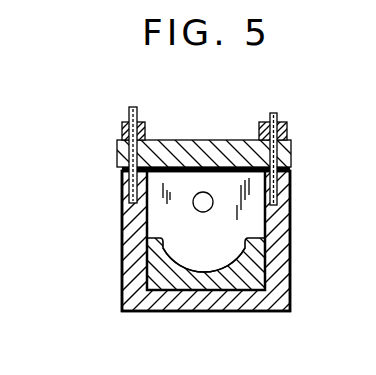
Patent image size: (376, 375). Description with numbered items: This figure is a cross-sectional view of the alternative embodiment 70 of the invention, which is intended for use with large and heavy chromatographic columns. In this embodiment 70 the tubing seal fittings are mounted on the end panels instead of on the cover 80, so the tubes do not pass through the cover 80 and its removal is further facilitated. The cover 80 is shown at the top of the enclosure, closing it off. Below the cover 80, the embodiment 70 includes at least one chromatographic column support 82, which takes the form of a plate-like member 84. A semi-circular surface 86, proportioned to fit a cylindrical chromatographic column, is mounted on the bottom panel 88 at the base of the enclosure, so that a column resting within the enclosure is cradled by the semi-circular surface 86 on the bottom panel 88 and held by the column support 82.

The alternative embodiment 70 is at (100, 243).
The cover 80 is at (185, 140).
The chromatographic column support 82 is at (162, 275).
The plate-like member 84 is at (245, 266).
The semi-circular surface 86 is at (208, 272).
The bottom panel 88 is at (267, 315).